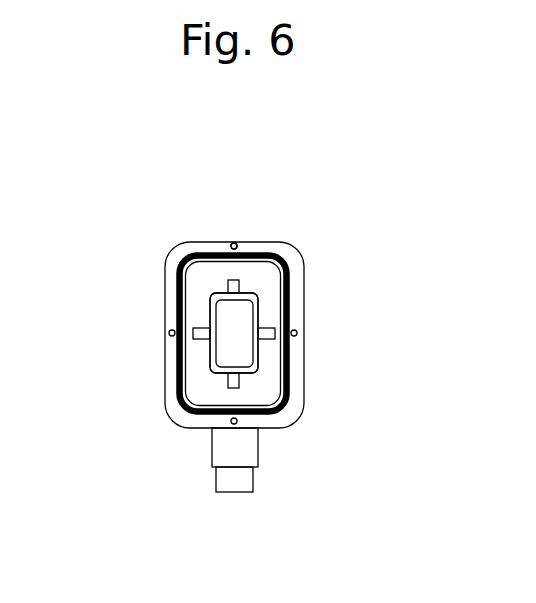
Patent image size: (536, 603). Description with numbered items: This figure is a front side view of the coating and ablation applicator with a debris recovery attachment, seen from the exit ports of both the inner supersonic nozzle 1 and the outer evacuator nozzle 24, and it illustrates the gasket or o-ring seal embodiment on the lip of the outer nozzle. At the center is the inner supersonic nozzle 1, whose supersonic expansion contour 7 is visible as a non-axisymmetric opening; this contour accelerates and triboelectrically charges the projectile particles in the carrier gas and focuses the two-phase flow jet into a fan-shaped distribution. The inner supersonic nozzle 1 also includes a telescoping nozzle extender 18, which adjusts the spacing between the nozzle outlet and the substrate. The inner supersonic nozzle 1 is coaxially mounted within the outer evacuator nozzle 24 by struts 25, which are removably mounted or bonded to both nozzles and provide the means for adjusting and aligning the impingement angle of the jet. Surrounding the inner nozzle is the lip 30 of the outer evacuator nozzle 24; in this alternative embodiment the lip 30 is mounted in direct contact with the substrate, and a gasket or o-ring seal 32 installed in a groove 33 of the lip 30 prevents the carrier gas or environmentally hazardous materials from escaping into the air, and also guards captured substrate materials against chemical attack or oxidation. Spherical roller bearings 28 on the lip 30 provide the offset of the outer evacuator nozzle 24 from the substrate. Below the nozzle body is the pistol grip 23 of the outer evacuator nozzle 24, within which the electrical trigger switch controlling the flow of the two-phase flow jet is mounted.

The inner supersonic nozzle 1 is at (229, 290).
The supersonic expansion contour 7 is at (212, 370).
The telescoping nozzle extender 18 is at (255, 320).
The pistol grip 23 is at (233, 485).
The outer evacuator nozzle 24 is at (248, 356).
The struts 25 is at (236, 288).
The spherical roller bearings 28 is at (233, 243).
The lip 30 is at (178, 415).
The gasket or o-ring seal 32 is at (182, 263).
The groove 33 is at (177, 362).